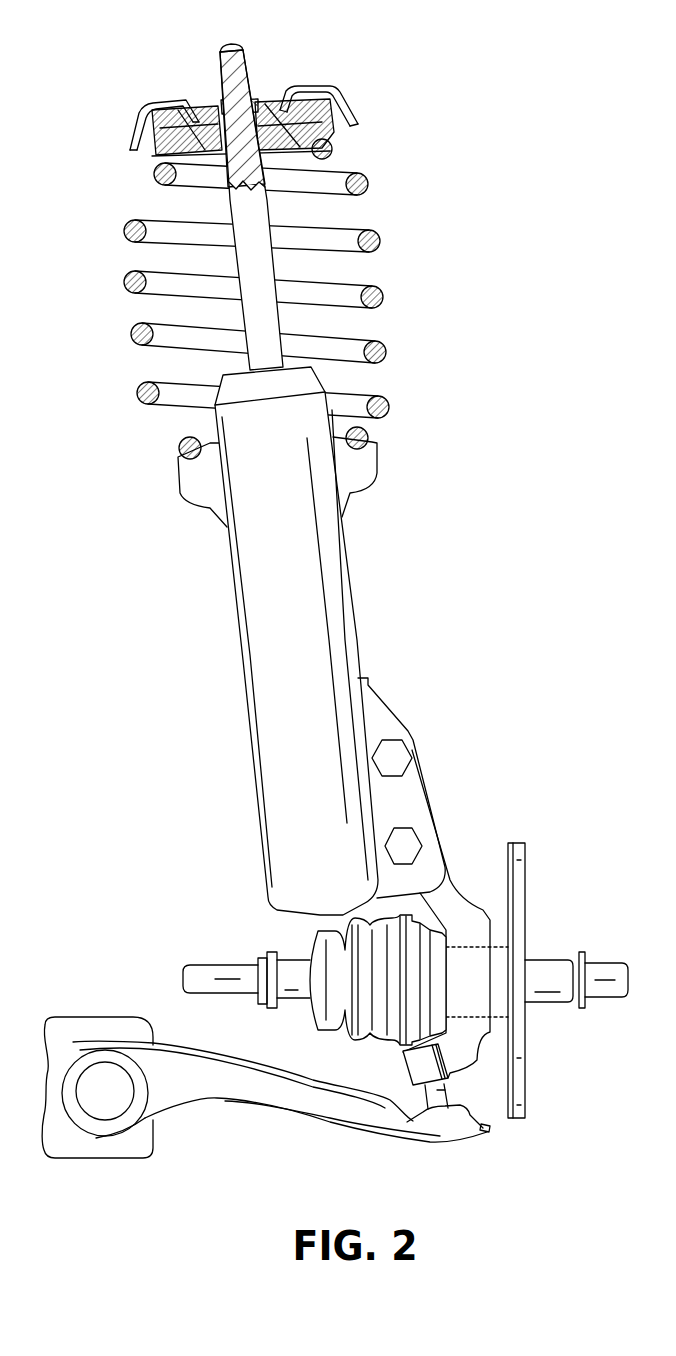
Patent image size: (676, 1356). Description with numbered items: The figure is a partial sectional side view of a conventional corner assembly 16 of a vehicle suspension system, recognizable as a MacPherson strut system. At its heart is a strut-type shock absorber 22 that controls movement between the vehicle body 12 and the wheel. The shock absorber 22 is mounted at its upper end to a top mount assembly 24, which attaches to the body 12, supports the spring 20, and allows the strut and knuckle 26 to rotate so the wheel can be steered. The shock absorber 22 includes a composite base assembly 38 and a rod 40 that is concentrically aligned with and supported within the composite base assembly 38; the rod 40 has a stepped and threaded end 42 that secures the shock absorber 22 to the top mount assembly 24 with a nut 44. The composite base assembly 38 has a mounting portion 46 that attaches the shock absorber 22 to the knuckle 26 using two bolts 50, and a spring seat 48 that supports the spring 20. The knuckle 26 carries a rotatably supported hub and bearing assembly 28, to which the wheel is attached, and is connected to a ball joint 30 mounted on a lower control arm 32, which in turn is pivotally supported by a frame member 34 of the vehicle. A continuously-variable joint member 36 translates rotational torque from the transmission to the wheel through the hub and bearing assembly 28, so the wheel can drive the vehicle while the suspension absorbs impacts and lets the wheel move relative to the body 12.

The vehicle body 12 is at (317, 83).
The corner assembly 16 is at (330, 618).
The spring 20 is at (385, 218).
The strut-type shock absorber 22 is at (205, 462).
The top mount assembly 24 is at (362, 128).
The knuckle 26 is at (452, 897).
The hub and bearing assembly 28 is at (518, 918).
The ball joint 30 is at (488, 1131).
The lower control arm 32 is at (272, 1090).
The frame member 34 is at (77, 1143).
The continuously-variable joint member 36 is at (290, 938).
The composite base assembly 38 is at (265, 611).
The rod 40 is at (246, 258).
The stepped and threaded end 42 is at (237, 76).
The nut 44 is at (253, 103).
The mounting portion 46 is at (372, 722).
The spring seat 48 is at (363, 470).
The bolts 50 is at (408, 840).